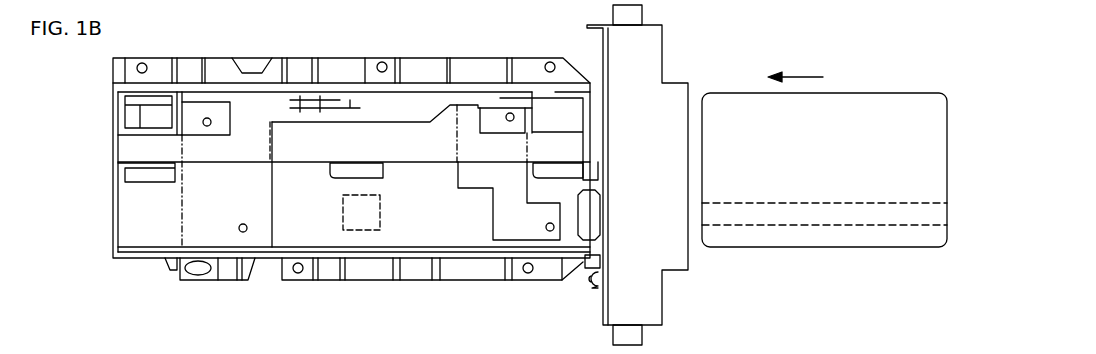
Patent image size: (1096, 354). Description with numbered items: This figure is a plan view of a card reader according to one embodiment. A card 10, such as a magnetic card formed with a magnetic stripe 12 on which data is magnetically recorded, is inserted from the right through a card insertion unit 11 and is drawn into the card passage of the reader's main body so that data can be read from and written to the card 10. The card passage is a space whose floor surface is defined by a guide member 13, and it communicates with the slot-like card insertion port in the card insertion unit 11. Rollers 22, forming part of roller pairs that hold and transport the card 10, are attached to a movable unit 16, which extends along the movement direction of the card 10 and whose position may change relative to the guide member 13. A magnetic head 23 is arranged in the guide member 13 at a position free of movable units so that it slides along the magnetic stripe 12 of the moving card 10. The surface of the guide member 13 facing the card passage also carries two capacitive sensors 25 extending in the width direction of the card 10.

The card 10 is at (851, 100).
The card insertion unit 11 is at (660, 55).
The magnetic stripe 12 is at (843, 224).
The guide member 13 is at (288, 227).
The movable unit 16 is at (443, 120).
The roller 22 is at (135, 170).
The magnetic head 23 is at (365, 225).
The capacitive sensor 25 is at (203, 112).